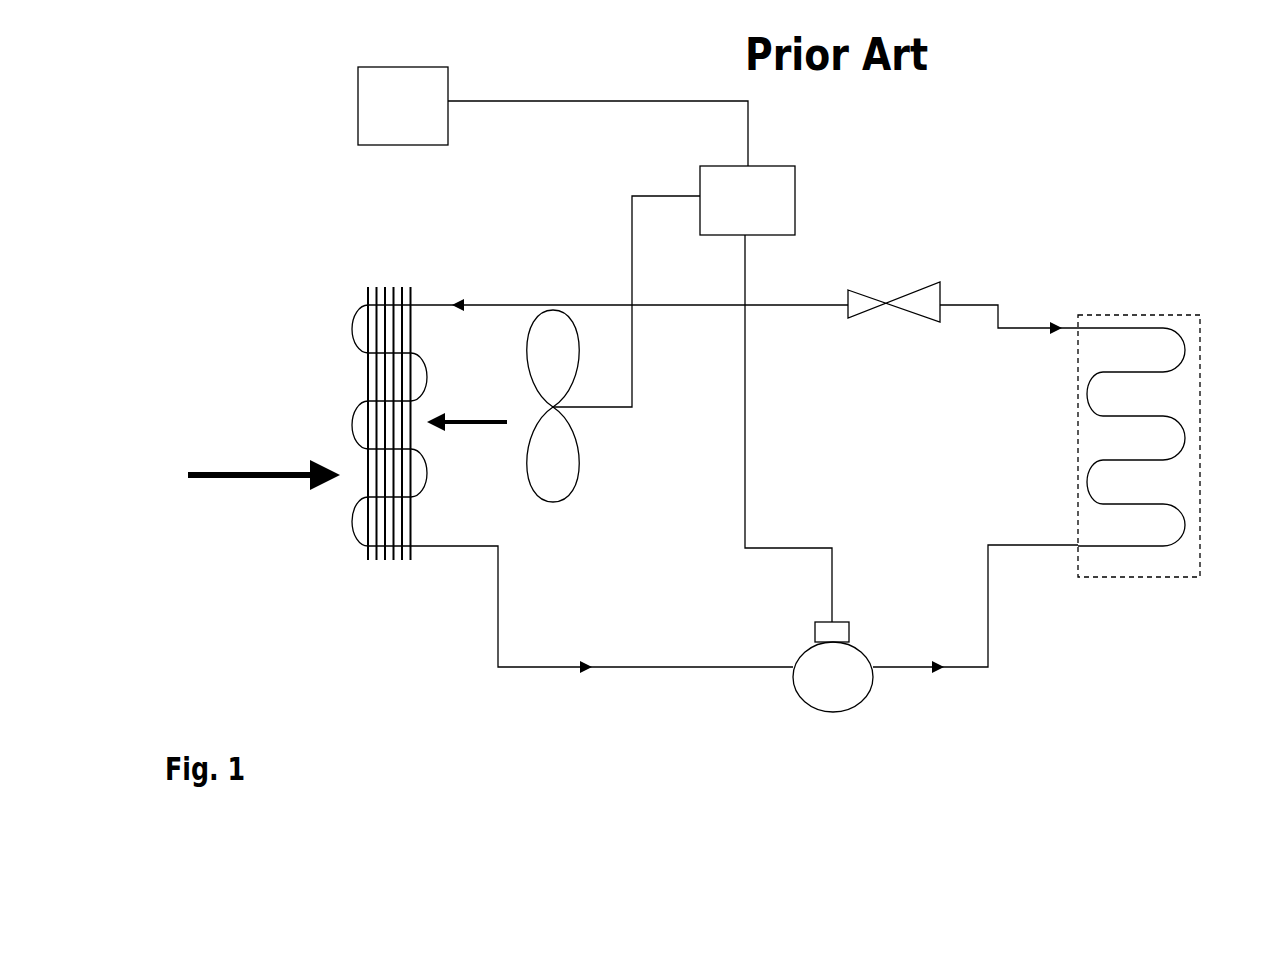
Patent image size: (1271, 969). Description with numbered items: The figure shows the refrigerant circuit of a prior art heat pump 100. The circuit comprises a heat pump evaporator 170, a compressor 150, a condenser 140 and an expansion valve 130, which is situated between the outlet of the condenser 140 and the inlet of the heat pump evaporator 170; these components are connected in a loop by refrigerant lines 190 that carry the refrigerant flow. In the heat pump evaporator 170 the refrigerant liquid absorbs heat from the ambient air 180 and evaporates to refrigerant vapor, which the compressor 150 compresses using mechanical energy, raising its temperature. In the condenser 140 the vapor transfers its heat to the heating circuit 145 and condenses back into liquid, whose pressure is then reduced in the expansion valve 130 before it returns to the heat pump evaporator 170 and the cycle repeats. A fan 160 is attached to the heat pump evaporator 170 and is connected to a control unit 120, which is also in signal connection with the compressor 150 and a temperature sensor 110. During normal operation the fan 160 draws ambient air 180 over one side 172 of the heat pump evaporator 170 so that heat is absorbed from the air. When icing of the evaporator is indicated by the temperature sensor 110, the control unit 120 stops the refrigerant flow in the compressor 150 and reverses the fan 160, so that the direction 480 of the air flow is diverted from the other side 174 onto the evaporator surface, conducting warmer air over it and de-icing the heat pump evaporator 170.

The heat pump 100 is at (1052, 181).
The temperature sensor 110 is at (448, 85).
The control unit 120 is at (758, 166).
The expansion valve 130 is at (897, 300).
The condenser 140 is at (1133, 418).
The heating circuit 145 is at (1150, 316).
The compressor 150 is at (802, 698).
The fan 160 is at (578, 458).
The heat pump evaporator 170 is at (389, 384).
The side of the heat pump evaporator 172 is at (367, 382).
The side of the heat pump evaporator 174 is at (412, 331).
The ambient air 180 is at (235, 478).
The refrigerant lines 190 is at (458, 302).
The direction of the air flow 480 is at (452, 412).